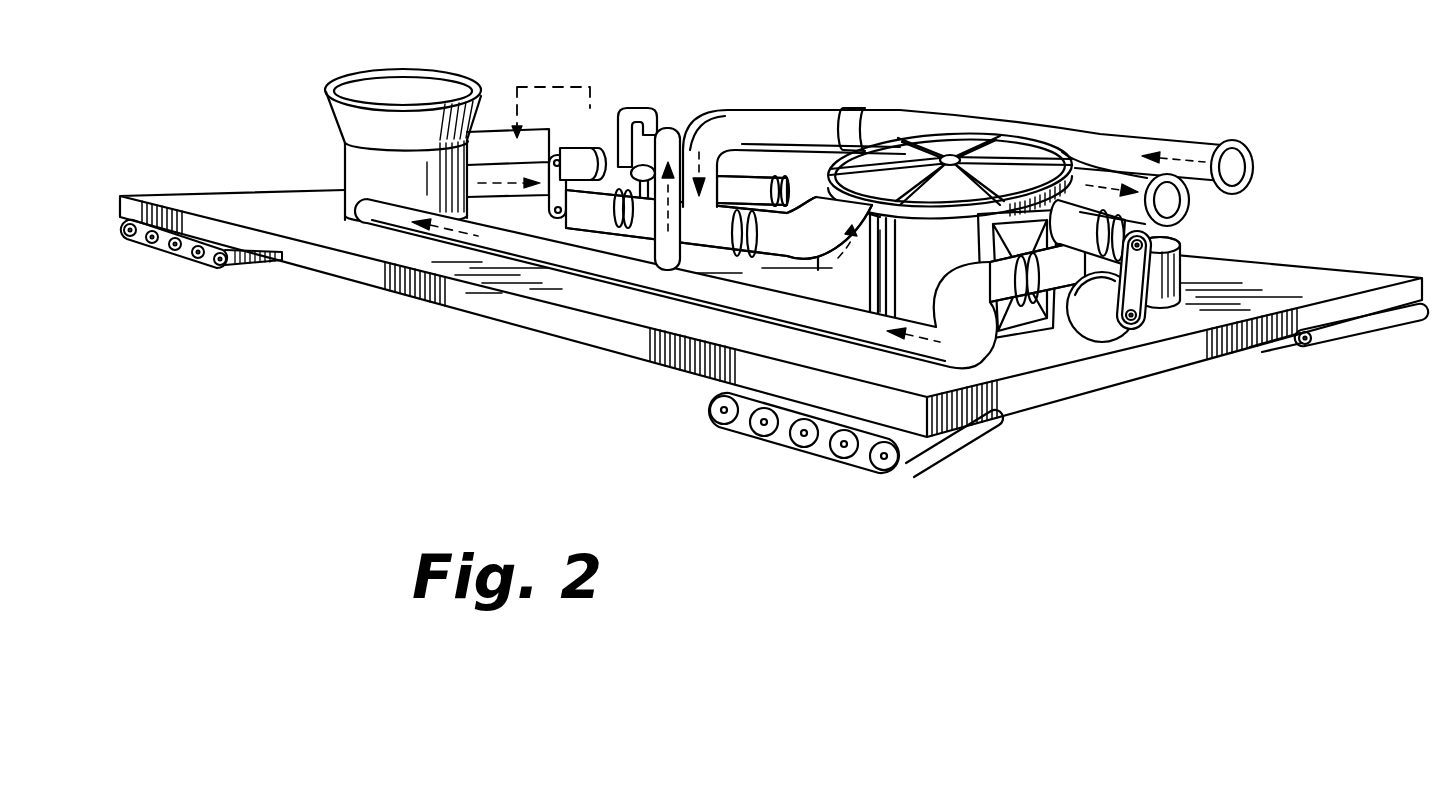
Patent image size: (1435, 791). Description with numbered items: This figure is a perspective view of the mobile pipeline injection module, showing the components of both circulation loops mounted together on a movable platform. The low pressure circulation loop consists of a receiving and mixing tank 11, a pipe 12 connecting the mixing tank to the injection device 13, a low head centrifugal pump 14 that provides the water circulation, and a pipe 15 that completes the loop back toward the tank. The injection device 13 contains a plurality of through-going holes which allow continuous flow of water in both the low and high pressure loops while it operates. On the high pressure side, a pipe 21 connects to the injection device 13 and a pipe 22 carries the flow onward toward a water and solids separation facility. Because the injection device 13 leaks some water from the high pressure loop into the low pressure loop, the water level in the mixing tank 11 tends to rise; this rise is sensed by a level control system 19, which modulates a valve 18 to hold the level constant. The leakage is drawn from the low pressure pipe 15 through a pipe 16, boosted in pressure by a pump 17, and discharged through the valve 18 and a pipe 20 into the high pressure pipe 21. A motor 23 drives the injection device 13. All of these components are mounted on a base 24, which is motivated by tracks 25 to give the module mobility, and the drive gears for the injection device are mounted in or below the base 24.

The receiving and mixing tank 11 is at (392, 41).
The pipe 12 is at (527, 163).
The injection device 13 is at (950, 140).
The low head centrifugal pump 14 is at (1110, 340).
The pipe 15 is at (550, 258).
The pipe 16 is at (650, 130).
The pump 17 is at (553, 222).
The valve 18 is at (645, 250).
The level control system 19 is at (575, 78).
The pipe 20 is at (700, 252).
The pipe 21 is at (810, 108).
The pipe 22 is at (1182, 221).
The motor 23 is at (1148, 322).
The base 24 is at (1047, 407).
The tracks 25 is at (943, 463).